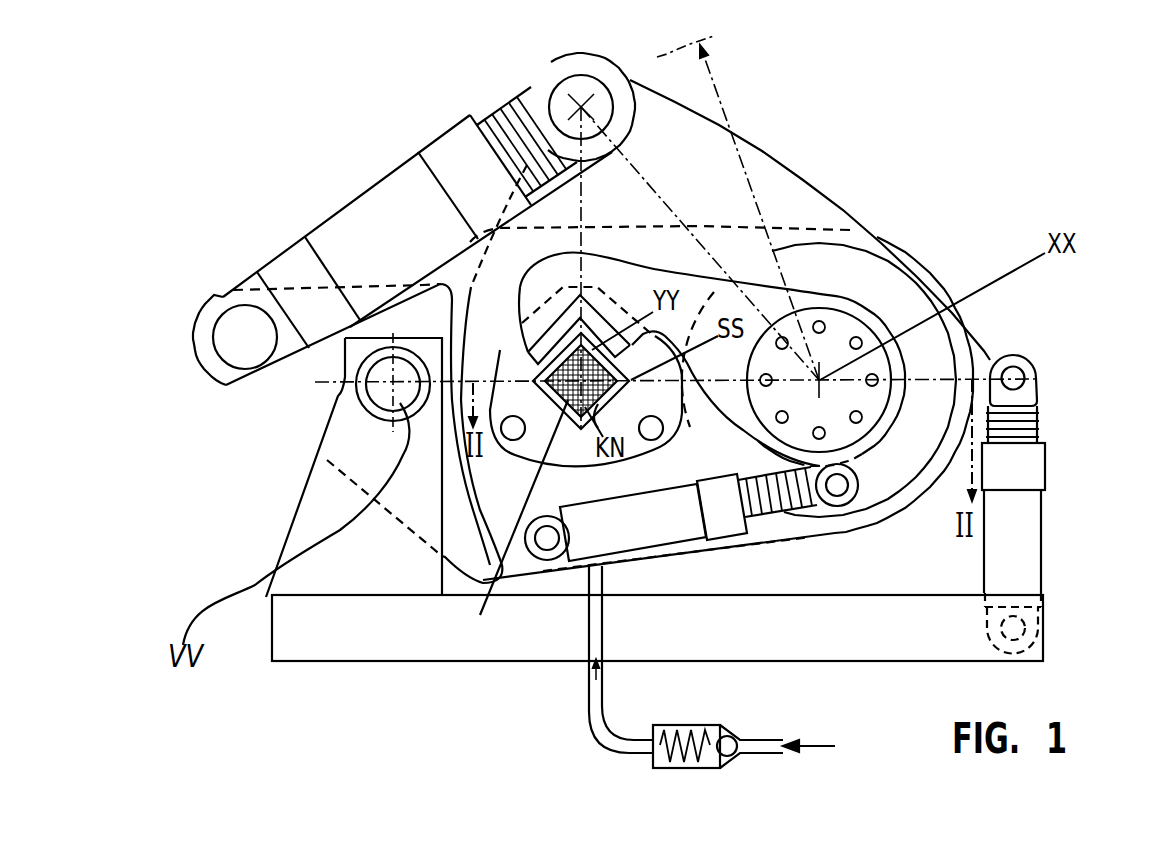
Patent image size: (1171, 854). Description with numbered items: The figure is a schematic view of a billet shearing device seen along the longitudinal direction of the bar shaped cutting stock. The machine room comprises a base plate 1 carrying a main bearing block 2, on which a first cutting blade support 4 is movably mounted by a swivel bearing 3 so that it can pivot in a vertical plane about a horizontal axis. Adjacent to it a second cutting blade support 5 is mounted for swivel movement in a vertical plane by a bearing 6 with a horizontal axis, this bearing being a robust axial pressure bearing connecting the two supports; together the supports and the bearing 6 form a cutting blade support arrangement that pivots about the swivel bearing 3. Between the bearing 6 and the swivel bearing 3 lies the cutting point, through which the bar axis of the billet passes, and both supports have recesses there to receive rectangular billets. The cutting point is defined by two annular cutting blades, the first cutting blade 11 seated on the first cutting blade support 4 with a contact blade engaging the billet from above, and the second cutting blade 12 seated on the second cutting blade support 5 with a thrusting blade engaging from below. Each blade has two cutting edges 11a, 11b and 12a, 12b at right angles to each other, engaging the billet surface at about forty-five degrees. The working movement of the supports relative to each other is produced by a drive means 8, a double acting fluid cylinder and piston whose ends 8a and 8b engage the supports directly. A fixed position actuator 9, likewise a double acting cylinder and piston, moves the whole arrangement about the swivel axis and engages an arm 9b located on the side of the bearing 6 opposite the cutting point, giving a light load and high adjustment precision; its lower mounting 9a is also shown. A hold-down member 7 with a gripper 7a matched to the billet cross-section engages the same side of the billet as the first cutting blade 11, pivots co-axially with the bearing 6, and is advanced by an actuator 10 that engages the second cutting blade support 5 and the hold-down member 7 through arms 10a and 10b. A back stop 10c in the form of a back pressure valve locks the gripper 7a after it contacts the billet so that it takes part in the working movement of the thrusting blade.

The base plate 1 is at (372, 638).
The main bearing block 2 is at (320, 510).
The swivel bearing 3 is at (372, 400).
The first cutting blade support 4 is at (283, 400).
The second cutting blade support 5 is at (690, 135).
The bearing 6 is at (845, 327).
The hold-down member 7 is at (637, 268).
The gripper 7a is at (592, 300).
The drive means 8 is at (393, 193).
The end of drive means 8a is at (242, 323).
The end of drive means 8b is at (570, 88).
The fixed position actuator 9 is at (1030, 537).
The support cylinder foot 9a is at (1028, 640).
The arm 9b is at (1024, 370).
The actuator 10 is at (657, 537).
The arm 10a is at (545, 548).
The arm 10b is at (836, 496).
The back stop 10c is at (713, 733).
The first cutting blade 11 is at (552, 359).
The cutting edge 11a is at (552, 358).
The cutting edge 11b is at (608, 305).
The second cutting blade 12 is at (573, 403).
The cutting edge 12a is at (510, 525).
The cutting edge 12b is at (606, 408).